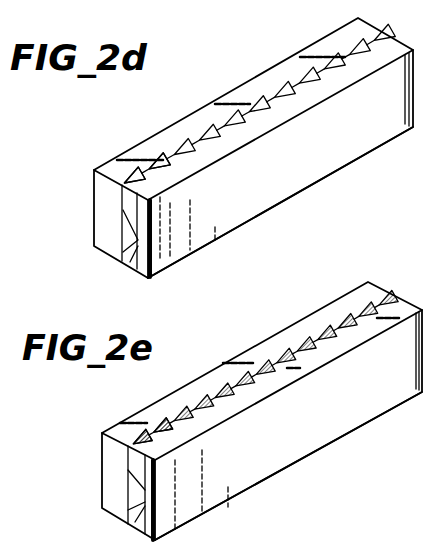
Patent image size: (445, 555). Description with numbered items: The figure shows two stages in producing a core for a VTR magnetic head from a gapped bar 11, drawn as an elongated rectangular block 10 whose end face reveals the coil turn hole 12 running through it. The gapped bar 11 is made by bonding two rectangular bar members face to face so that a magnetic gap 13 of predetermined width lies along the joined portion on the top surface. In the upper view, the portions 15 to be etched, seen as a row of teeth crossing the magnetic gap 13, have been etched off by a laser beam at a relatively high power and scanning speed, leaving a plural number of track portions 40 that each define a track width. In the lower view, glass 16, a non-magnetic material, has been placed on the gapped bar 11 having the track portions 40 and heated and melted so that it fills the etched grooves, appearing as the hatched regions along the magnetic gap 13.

In FIG. 2d, the elongated hollow body 10 is at (157, 193).
In FIG. 2d, the gapped bar 11 is at (324, 180).
In FIG. 2e, the gapped bar 11 is at (319, 452).
In FIG. 2d, the coil turn hole 12 is at (123, 257).
In FIG. 2e, the coil turn hole 12 is at (128, 503).
In FIG. 2d, the magnetic gap 13 is at (200, 142).
In FIG. 2e, the magnetic gap 13 is at (333, 330).
In FIG. 2d, the portion to be etched 15 is at (133, 182).
In FIG. 2e, the glass 16 is at (153, 428).
In FIG. 2e, the track portions 40 is at (152, 435).